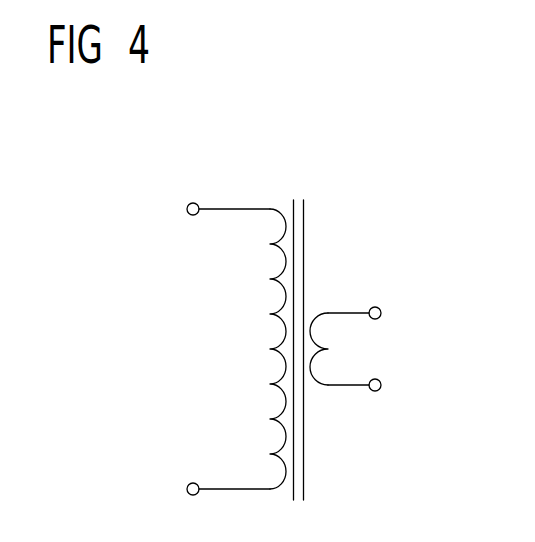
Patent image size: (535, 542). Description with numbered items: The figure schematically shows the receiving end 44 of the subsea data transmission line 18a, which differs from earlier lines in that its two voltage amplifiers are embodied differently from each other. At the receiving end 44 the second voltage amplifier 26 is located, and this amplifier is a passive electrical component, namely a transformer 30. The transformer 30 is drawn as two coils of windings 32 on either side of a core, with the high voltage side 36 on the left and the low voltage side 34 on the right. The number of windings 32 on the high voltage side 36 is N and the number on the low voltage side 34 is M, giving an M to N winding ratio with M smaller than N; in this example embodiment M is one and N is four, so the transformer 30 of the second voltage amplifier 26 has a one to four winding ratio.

The receiving end 44 is at (285, 148).
The subsea data transmission line 18a is at (231, 207).
The windings 32 is at (272, 350).
The second voltage amplifier 26 is at (304, 481).
The transformer 30 is at (299, 350).
The low voltage side 34 is at (455, 364).
The high voltage side 36 is at (122, 366).